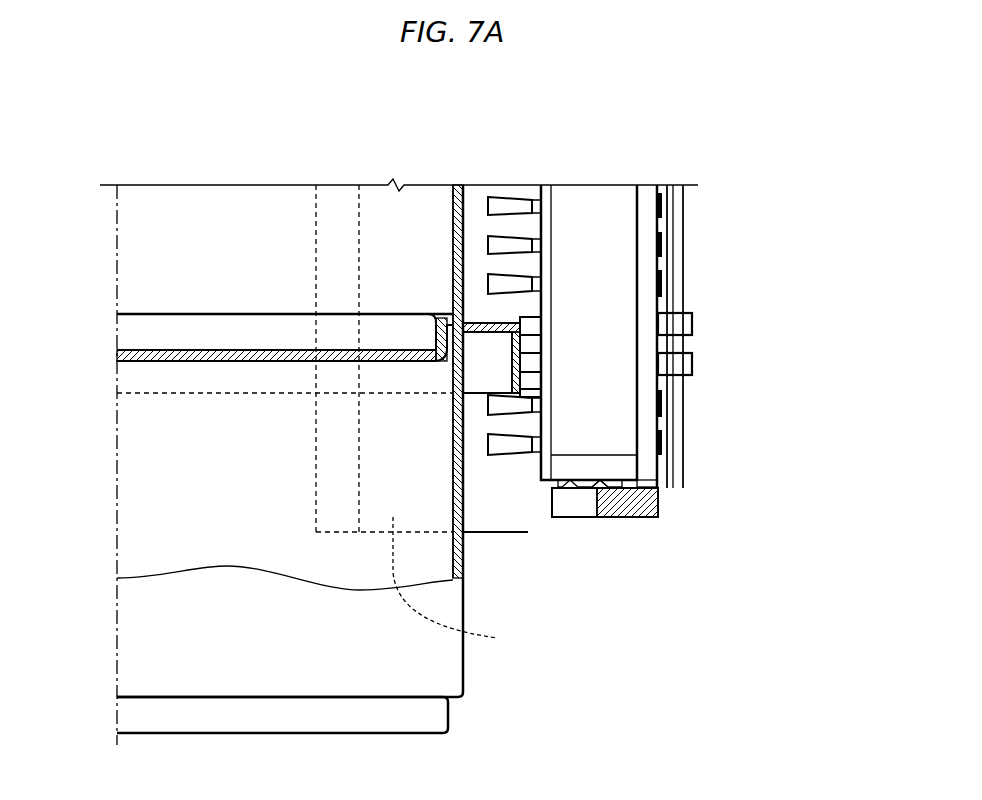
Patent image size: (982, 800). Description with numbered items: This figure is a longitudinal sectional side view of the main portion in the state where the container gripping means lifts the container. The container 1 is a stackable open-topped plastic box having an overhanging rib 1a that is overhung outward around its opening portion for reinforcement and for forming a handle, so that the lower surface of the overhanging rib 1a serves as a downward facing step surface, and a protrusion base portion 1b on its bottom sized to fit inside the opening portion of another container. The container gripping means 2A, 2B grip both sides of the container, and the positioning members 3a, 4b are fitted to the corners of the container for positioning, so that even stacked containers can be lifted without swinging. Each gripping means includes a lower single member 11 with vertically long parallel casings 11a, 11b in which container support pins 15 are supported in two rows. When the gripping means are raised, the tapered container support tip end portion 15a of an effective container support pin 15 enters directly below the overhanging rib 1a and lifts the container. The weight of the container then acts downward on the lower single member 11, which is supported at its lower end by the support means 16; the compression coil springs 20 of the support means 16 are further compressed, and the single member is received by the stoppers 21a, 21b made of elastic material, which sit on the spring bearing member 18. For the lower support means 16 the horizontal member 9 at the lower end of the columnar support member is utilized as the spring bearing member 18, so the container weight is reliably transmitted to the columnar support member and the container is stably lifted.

The container 1 is at (236, 240).
The overhanging rib 1a is at (505, 325).
The protrusion base portion 1b is at (259, 360).
The container gripping means 2A is at (592, 298).
The container gripping means 2B is at (595, 185).
The positioning member 3a is at (496, 585).
The positioning member 4b is at (496, 585).
The horizontal member 9 is at (627, 537).
The spring bearing member 18 is at (627, 507).
The lower single member 11 is at (660, 265).
The parallel casing 11a is at (700, 313).
The parallel casing 11b is at (612, 207).
The container support pin 15 is at (487, 287).
The container support tip end portion 15a is at (522, 285).
The support means 16 is at (599, 478).
The compression coil spring 20 is at (595, 489).
The stopper 21a is at (727, 474).
The stopper 21b is at (645, 484).